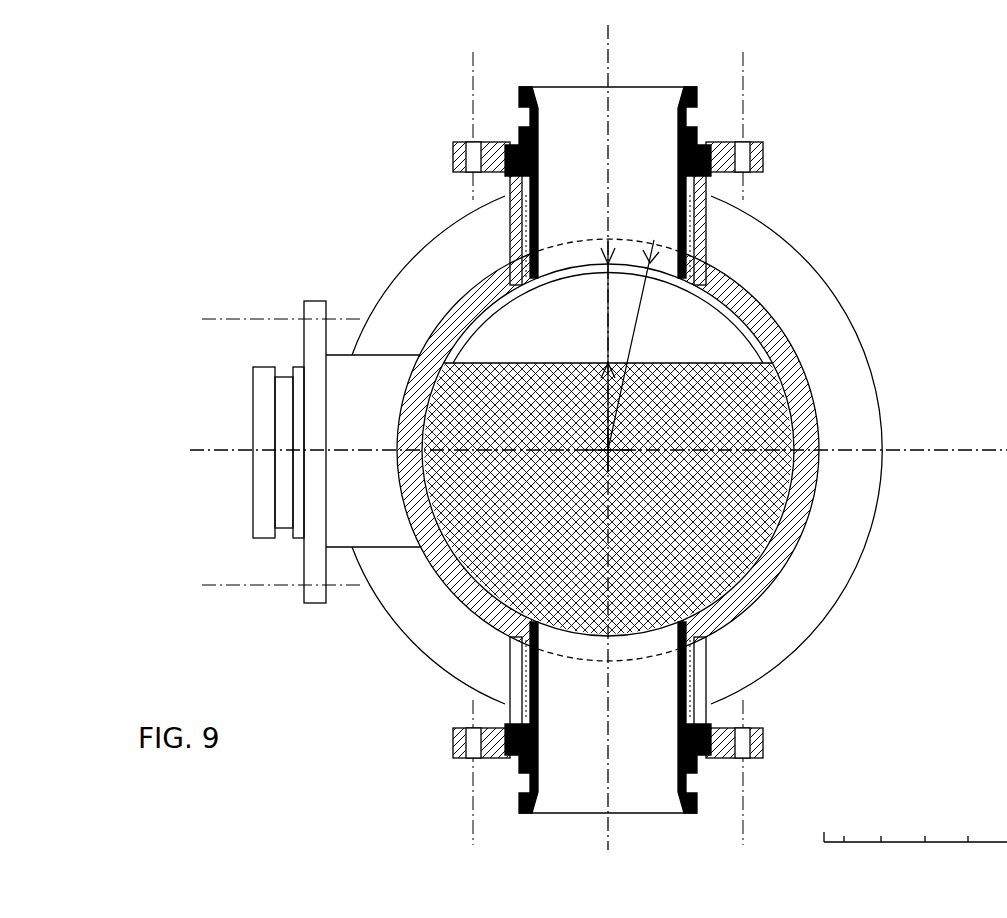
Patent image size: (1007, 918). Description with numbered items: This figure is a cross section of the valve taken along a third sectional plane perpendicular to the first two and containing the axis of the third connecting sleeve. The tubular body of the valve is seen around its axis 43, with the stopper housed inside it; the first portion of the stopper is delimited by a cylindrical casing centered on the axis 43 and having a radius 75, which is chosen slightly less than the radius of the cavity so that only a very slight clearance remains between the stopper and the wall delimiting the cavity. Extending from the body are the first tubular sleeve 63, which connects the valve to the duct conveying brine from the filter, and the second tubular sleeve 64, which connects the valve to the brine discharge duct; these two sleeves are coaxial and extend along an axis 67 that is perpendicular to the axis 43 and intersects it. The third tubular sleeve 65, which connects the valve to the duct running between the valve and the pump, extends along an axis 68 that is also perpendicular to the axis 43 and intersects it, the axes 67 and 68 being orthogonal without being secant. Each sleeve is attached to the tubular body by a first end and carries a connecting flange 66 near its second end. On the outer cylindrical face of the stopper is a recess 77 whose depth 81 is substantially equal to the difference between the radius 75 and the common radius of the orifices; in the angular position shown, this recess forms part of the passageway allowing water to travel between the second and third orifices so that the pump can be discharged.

The axis 43 is at (613, 456).
The first tubular sleeve 63 is at (708, 718).
The second tubular sleeve 64 is at (706, 187).
The third tubular sleeve 65 is at (343, 548).
The connecting flange 66 is at (762, 153).
The axis 67 is at (609, 52).
The axis 68 is at (202, 449).
The radius 75 is at (638, 342).
The recess 77 is at (553, 333).
The depth 81 is at (609, 302).